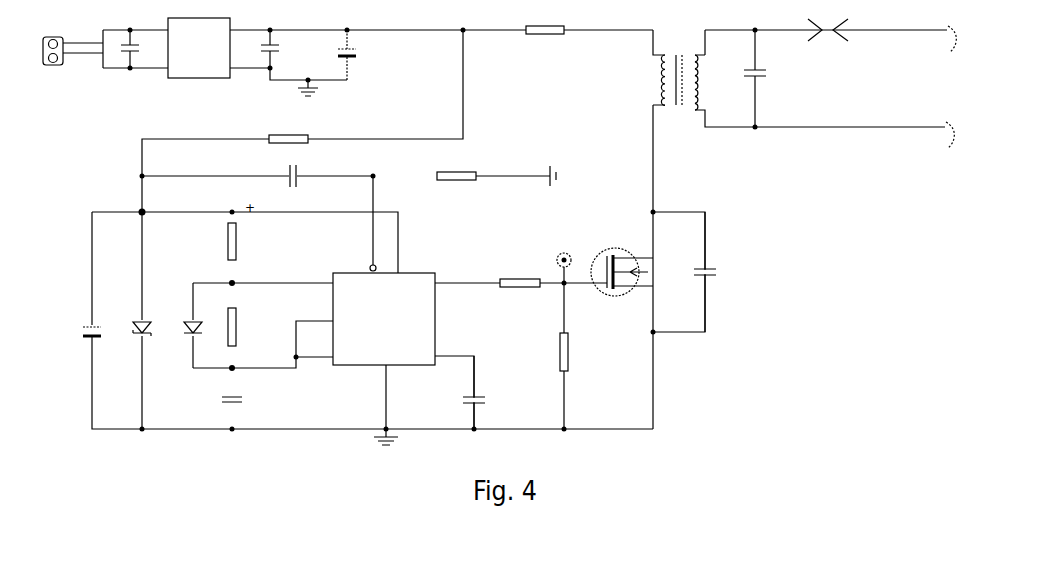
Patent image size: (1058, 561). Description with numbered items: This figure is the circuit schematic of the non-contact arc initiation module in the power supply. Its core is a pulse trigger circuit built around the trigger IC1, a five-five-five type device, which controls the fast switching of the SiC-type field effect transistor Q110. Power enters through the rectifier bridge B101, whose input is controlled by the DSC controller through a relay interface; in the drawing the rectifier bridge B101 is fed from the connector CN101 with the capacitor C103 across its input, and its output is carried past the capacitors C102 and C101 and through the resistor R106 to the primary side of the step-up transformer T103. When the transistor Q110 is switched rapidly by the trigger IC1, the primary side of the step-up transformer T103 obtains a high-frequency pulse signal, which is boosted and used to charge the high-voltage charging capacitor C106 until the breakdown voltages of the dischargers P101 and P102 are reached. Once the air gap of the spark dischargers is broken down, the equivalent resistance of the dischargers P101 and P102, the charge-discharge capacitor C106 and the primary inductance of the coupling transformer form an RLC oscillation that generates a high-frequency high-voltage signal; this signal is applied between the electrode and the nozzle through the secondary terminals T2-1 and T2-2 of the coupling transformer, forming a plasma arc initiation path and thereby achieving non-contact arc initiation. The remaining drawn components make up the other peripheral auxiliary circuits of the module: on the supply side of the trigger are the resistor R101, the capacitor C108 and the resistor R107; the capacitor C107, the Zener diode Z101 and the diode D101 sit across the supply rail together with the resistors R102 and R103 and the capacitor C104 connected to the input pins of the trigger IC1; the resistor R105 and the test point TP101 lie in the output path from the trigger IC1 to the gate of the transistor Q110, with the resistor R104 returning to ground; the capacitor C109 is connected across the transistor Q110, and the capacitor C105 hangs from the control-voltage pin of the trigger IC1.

The AC input connector CN101 is at (73, 44).
The capacitor C103 is at (135, 65).
The rectifier bridge B101 is at (199, 42).
The capacitor C102 is at (275, 38).
The electrolytic capacitor C101 is at (352, 44).
The resistor R106 is at (545, 22).
The step-up transformer T103 is at (679, 72).
The high-voltage charging capacitor C106 is at (774, 78).
The discharger P101 is at (804, 24).
The discharger P102 is at (848, 24).
The secondary of the coupling transformer T2-1 is at (938, 34).
The secondary of the coupling transformer T2-2 is at (936, 131).
The resistor R101 is at (288, 132).
The capacitor C108 is at (314, 176).
The resistor R107 is at (496, 172).
The electrolytic capacitor C107 is at (78, 329).
The zener diode Z101 is at (134, 313).
The diode 1N4148 D101 is at (181, 342).
The resistor R102 is at (250, 241).
The resistor R103 is at (250, 327).
The capacitor C104 is at (249, 405).
The trigger IC1 is at (386, 348).
The resistor R105 is at (520, 276).
The test point TP101 is at (566, 259).
The SiC-type field effect transistor Q110 is at (619, 260).
The resistor R104 is at (580, 352).
The capacitor C109 is at (719, 272).
The capacitor C105 is at (491, 392).